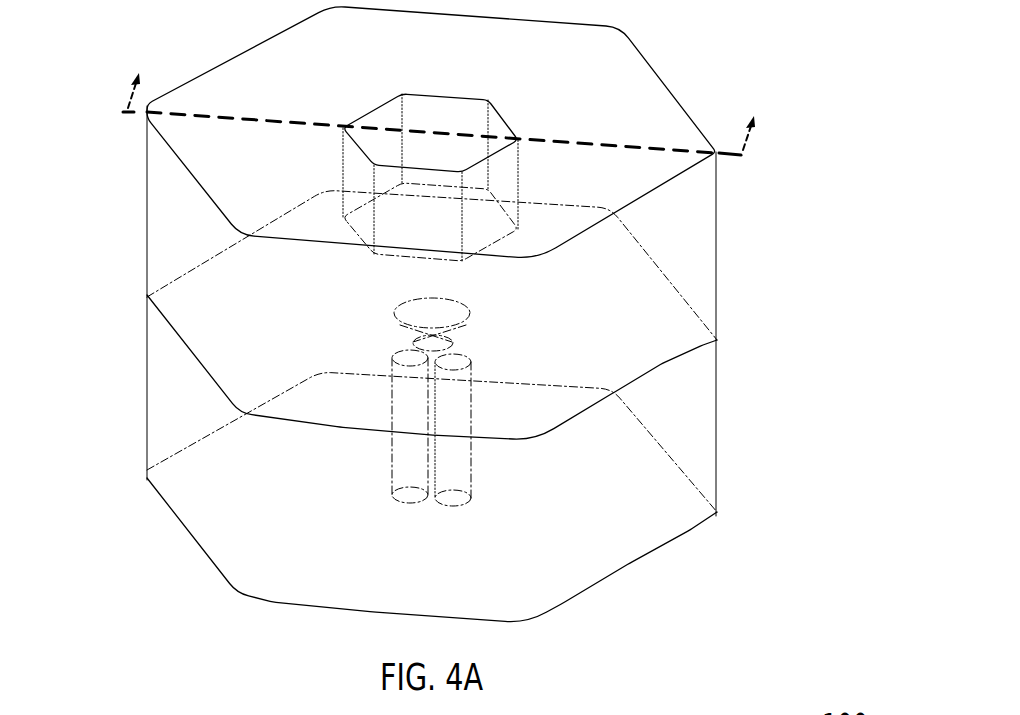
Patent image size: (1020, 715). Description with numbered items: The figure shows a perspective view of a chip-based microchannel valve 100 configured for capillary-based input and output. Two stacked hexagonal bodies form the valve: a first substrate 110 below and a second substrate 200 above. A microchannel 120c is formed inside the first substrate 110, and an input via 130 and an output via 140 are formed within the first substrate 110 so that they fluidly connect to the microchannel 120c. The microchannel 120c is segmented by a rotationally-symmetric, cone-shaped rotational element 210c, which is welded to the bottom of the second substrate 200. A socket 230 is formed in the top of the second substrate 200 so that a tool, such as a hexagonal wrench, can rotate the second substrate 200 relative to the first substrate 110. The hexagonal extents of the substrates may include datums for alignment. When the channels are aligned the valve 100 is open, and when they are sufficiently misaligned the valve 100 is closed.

The microchannel valve 100 is at (795, 70).
The second substrate 200 is at (147, 187).
The socket 230 is at (368, 112).
The rotational element 210c is at (242, 293).
The first substrate 110 is at (147, 412).
The microchannel 120c is at (458, 348).
The input via 130 is at (398, 500).
The output via 140 is at (448, 507).